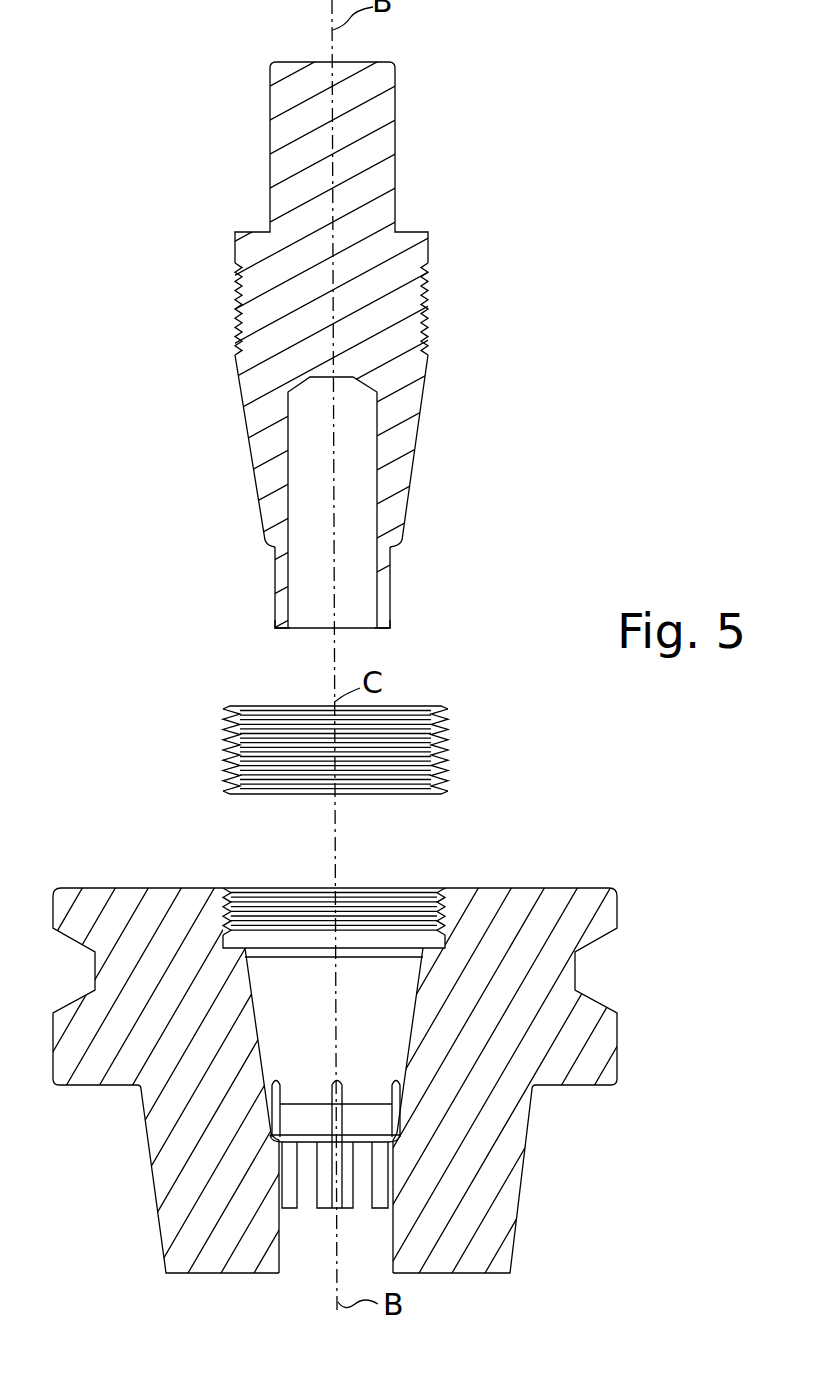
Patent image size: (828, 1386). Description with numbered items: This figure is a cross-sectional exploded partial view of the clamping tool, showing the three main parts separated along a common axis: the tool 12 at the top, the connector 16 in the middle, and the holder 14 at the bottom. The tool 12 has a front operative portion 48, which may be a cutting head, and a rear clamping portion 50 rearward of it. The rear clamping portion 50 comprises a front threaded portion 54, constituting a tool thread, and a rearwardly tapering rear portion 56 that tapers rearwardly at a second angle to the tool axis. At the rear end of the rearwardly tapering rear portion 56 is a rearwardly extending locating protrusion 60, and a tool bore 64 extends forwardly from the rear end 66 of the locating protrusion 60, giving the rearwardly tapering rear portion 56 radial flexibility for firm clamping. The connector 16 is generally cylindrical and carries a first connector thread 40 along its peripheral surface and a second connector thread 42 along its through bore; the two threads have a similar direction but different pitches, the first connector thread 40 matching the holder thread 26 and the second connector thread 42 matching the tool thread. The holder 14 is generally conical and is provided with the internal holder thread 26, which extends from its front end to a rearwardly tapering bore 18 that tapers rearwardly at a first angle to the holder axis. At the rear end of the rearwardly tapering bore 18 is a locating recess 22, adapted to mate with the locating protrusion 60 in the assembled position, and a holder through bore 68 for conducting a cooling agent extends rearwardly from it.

The tool 12 is at (518, 150).
The front operative portion 48 is at (208, 132).
The rear clamping portion 50 is at (185, 331).
The front threaded portion 54 is at (432, 302).
The rearwardly tapering rear portion 56 is at (418, 417).
The locating protrusion 60 is at (270, 566).
The tool bore 64 is at (308, 613).
The rear end 66 is at (387, 630).
The connector 16 is at (493, 732).
The first connector thread 40 is at (226, 742).
The second connector thread 42 is at (430, 770).
The holder 14 is at (558, 1234).
The holder thread 26 is at (236, 902).
The rearwardly tapering bore 18 is at (420, 990).
The locating recess 22 is at (365, 1125).
The holder through bore 68 is at (295, 1258).